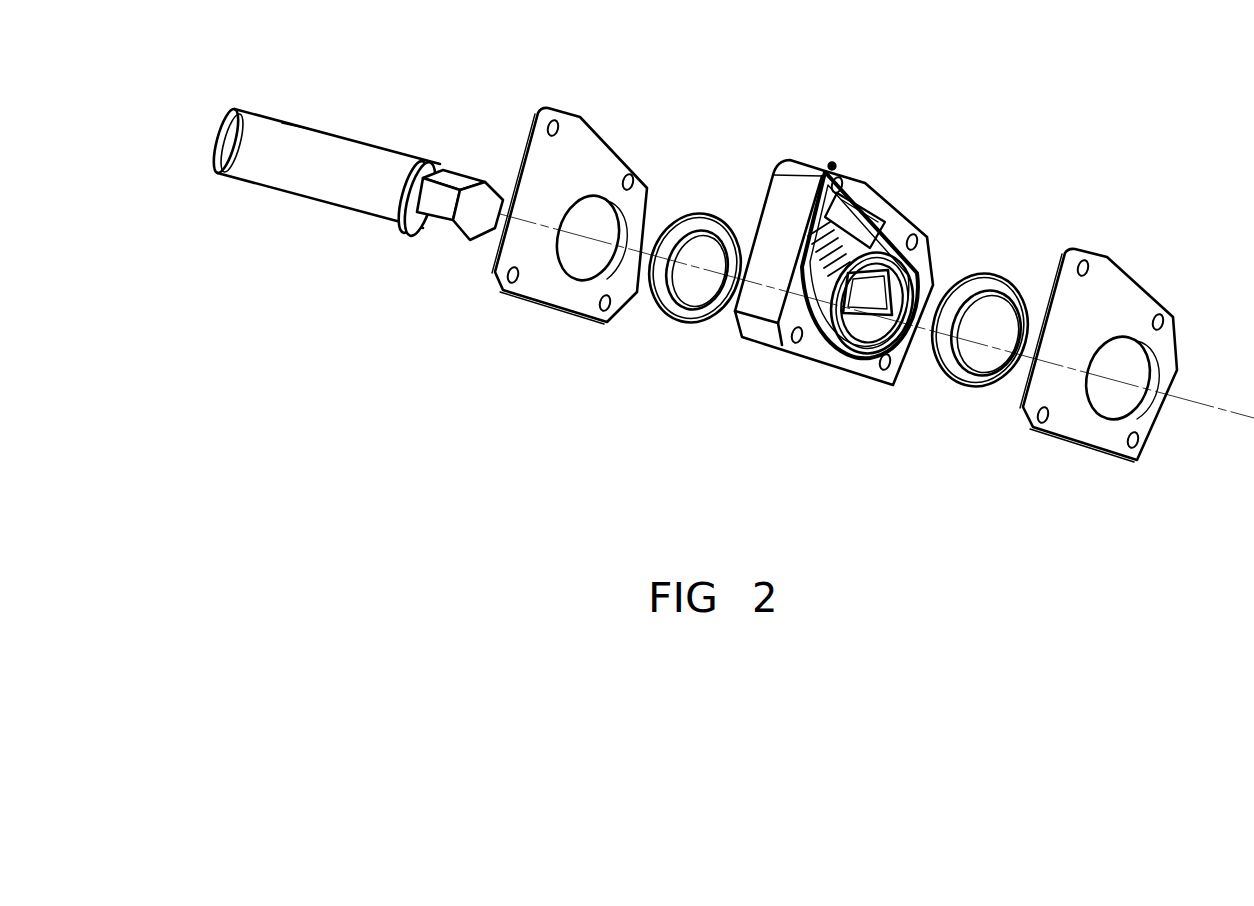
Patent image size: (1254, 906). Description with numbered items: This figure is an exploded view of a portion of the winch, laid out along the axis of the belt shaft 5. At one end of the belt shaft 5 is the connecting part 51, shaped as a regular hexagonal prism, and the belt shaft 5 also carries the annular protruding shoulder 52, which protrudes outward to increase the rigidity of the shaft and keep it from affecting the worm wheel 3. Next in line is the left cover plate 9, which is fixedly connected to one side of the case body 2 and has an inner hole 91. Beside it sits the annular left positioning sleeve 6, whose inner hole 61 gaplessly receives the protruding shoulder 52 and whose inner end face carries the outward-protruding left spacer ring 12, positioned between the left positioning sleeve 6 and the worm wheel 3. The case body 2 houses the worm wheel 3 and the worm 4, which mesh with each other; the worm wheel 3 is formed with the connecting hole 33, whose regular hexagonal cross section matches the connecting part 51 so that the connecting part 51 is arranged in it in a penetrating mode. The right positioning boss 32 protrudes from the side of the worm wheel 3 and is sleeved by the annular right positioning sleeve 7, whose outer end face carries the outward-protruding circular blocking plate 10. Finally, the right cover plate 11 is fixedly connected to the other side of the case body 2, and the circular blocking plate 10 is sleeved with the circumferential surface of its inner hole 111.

The case body 2 is at (862, 287).
The worm wheel 3 is at (840, 328).
The worm 4 is at (832, 166).
The belt shaft 5 is at (322, 178).
The left positioning sleeve 6 is at (675, 252).
The right positioning sleeve 7 is at (1010, 340).
The left cover plate 9 is at (569, 282).
The circular blocking plate 10 is at (983, 343).
The right cover plate 11 is at (1134, 341).
The left spacer ring 12 is at (717, 232).
The right positioning boss 32 is at (883, 267).
The connecting hole 33 is at (863, 313).
The connecting part 51 is at (445, 203).
The protruding shoulder 52 is at (435, 163).
The inner hole 61 is at (702, 282).
The inner hole 91 is at (590, 258).
The inner hole 111 is at (1118, 401).